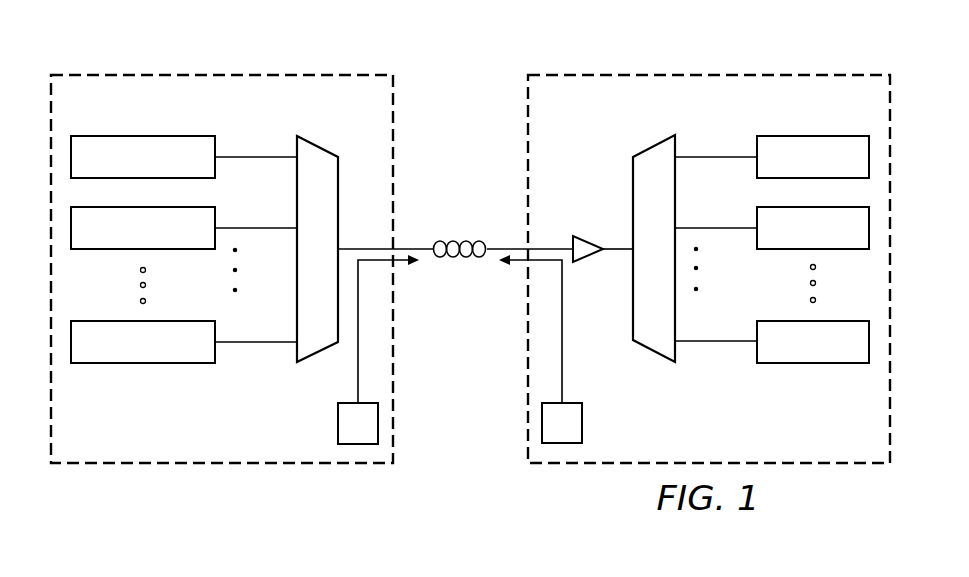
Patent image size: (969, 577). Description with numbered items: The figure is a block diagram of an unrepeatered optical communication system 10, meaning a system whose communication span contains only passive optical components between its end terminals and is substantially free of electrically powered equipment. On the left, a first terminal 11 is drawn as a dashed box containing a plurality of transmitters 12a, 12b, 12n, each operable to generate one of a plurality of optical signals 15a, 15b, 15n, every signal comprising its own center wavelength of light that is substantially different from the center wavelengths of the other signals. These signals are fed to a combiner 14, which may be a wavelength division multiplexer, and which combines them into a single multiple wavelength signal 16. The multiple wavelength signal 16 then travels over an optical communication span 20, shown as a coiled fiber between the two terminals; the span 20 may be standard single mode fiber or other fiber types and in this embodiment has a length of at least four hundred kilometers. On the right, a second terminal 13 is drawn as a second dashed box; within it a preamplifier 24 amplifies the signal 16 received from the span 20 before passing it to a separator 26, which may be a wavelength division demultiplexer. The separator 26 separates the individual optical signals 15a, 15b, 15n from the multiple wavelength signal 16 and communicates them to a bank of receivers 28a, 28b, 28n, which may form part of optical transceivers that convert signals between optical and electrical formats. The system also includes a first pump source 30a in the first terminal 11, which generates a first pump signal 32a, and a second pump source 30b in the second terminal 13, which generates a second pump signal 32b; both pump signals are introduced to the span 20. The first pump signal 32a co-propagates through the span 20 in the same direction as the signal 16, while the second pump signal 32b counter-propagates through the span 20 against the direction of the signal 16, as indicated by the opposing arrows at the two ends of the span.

The unrepeatered optical communication system 10 is at (420, 44).
The first terminal 11 is at (168, 58).
The second terminal 13 is at (771, 62).
The transmitter 12a is at (133, 136).
The transmitter 12b is at (112, 250).
The transmitter 12n is at (132, 363).
The combiner 14 is at (306, 141).
The optical signal 15a is at (282, 156).
The optical signal 15b is at (282, 230).
The optical signal 15n is at (262, 343).
The multiple wavelength signal 16 is at (372, 246).
The optical communication span 20 is at (481, 118).
The preamplifier 24 is at (590, 237).
The separator 26 is at (655, 146).
The receiver 28a is at (823, 136).
The receiver 28b is at (840, 249).
The receiver 28n is at (822, 363).
The first pump source 30a is at (338, 421).
The second pump source 30b is at (582, 422).
The first pump signal 32a is at (357, 373).
The second pump signal 32b is at (562, 372).